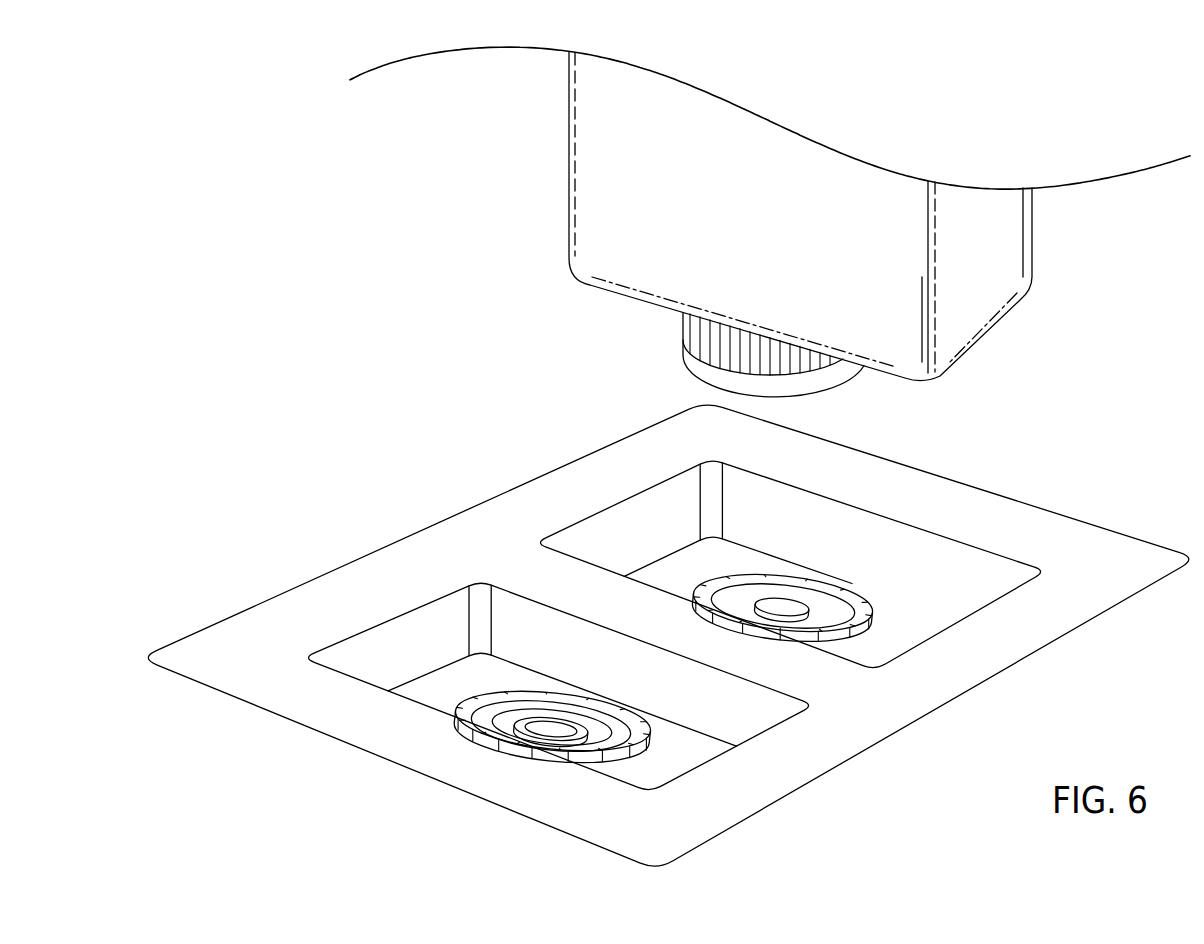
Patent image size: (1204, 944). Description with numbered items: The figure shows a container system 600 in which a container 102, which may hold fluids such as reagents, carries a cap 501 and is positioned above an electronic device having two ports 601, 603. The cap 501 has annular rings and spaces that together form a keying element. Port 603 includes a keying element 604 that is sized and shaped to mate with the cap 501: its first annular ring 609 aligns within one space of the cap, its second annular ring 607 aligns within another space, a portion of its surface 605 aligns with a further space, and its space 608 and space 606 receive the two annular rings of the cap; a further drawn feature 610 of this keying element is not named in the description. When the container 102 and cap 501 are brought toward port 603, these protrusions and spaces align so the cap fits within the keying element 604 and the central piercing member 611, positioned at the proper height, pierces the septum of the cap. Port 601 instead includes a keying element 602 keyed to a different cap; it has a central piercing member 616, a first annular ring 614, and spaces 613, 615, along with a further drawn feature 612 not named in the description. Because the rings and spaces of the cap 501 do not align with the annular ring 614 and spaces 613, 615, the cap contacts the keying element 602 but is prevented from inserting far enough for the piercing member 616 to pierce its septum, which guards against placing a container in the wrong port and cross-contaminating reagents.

The container 102 is at (1005, 256).
The cap 501 is at (667, 341).
The container system 600 is at (545, 474).
The port 601 is at (928, 548).
The keying element 602 is at (892, 617).
The port 603 is at (431, 632).
The keying element 604 is at (672, 742).
The surface 605 is at (600, 768).
The space 606 is at (567, 758).
The second annular ring 607 is at (527, 742).
The space 608 is at (500, 725).
The first annular ring 609 is at (522, 723).
The middle ring contact 610 is at (540, 727).
The central piercing member 611 is at (552, 730).
The recess floor contact 612 is at (740, 562).
The space 613 is at (765, 580).
The first annular ring 614 is at (788, 593).
The space 615 is at (807, 607).
The central piercing member 616 is at (710, 604).